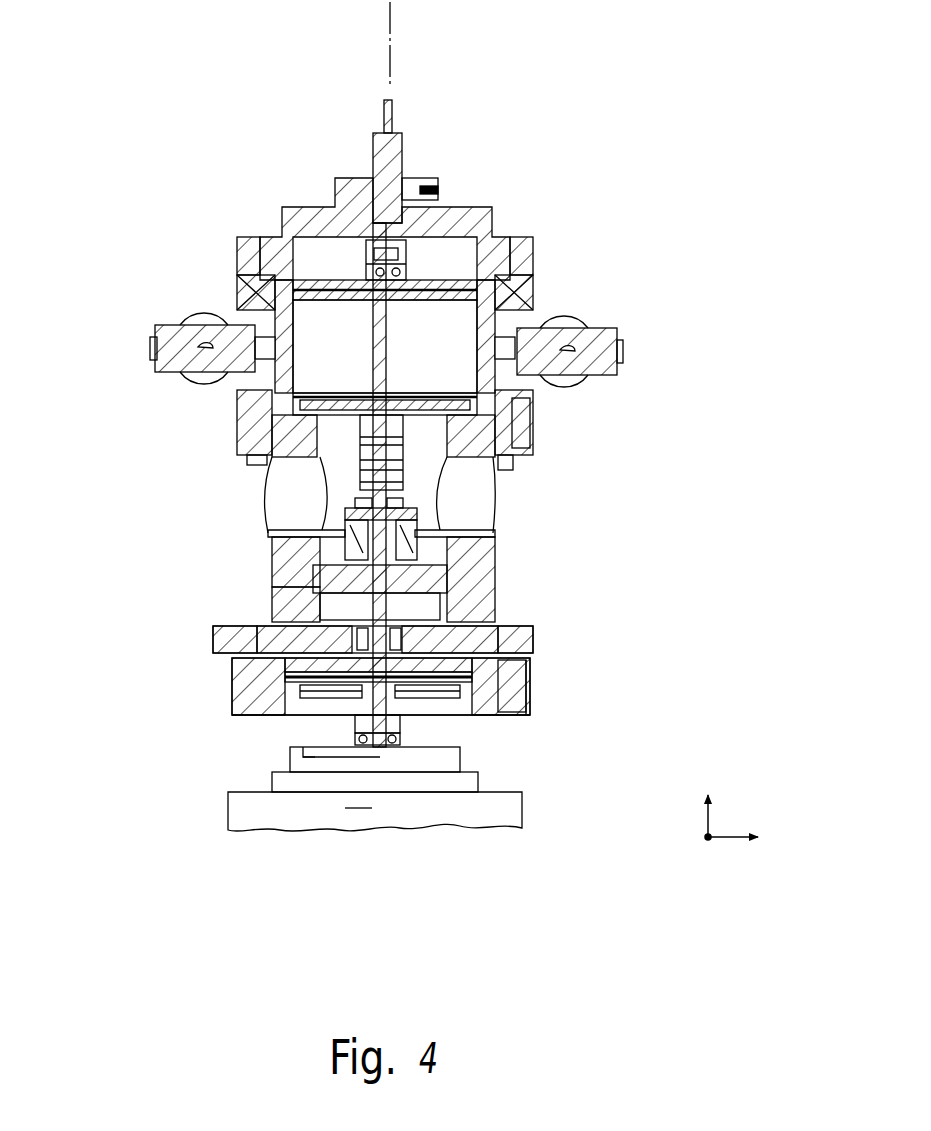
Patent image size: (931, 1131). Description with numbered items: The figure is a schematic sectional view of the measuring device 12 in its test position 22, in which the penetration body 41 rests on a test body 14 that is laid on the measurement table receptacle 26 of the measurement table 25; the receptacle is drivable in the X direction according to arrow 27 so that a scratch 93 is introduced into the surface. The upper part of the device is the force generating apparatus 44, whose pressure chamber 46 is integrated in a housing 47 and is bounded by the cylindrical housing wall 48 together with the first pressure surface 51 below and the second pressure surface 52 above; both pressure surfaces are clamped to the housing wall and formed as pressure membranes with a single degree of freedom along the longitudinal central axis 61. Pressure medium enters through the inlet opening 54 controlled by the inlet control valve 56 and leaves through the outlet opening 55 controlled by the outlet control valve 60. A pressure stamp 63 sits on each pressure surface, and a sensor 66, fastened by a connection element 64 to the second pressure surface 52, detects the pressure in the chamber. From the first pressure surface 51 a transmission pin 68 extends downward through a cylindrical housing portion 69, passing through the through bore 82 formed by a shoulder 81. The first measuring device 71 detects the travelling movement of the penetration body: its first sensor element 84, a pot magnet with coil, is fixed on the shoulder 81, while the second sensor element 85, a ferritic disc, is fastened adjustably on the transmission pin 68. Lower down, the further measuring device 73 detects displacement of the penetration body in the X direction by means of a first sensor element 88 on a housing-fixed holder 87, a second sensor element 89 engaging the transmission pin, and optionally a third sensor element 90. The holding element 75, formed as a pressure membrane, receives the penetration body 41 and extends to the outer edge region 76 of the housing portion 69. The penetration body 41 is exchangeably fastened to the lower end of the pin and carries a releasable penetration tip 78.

The measuring device 12 is at (583, 143).
The longitudinal central axis 61 is at (390, 65).
The sensor 66 is at (416, 150).
The connection element 64 is at (407, 253).
The pressure stamp 63 is at (413, 268).
The second pressure surface 52 is at (475, 318).
The cylindrical housing wall 48 is at (510, 318).
The inlet opening 54 is at (288, 348).
The outlet opening 55 is at (507, 377).
The inlet control valve 56 is at (197, 308).
The outlet control valve 60 is at (580, 306).
The pressure chamber 46 is at (373, 358).
The first pressure surface 51 is at (417, 403).
The housing 47 is at (213, 396).
The force generating apparatus 44 is at (222, 420).
The first measuring device 71 is at (430, 523).
The second sensor element 85 is at (440, 500).
The first sensor element 84 is at (330, 533).
The shoulder 81 is at (297, 575).
The through bore 82 is at (300, 604).
The housing portion 69 is at (497, 554).
The transmission pin 68 is at (495, 581).
The second sensor element 89 is at (495, 617).
The first sensor element 88 is at (225, 641).
The outer edge region 76 is at (230, 700).
The further measuring device 73 is at (232, 673).
The third sensor element 90 is at (527, 665).
The holder 87 is at (527, 703).
The holding element 75 is at (300, 715).
The penetration body 41 is at (355, 727).
The penetration tip 78 is at (385, 748).
The test position 22 is at (580, 737).
The test body 14 is at (445, 762).
The scratch 93 is at (328, 757).
The measurement table receptacle 26 is at (462, 783).
The measurement table 25 is at (465, 815).
The arrow 27 is at (372, 803).